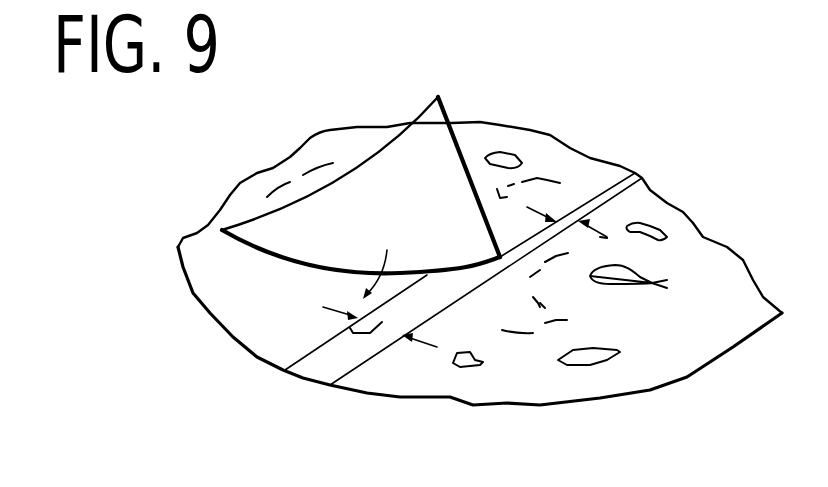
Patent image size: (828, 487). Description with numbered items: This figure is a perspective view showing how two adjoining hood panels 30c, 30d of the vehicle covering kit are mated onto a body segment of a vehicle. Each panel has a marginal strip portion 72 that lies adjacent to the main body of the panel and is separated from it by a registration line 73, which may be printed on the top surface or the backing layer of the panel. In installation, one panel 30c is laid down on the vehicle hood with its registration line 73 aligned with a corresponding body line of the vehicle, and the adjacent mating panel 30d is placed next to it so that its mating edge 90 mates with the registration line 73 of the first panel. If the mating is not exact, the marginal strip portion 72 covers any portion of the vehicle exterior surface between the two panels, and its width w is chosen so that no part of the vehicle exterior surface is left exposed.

The hood panel 30c is at (457, 378).
The hood panel 30d is at (541, 158).
The marginal strip portion 72 is at (323, 357).
The registration line 73 is at (376, 355).
The mating edge 90 is at (295, 290).
The width w is at (350, 328).